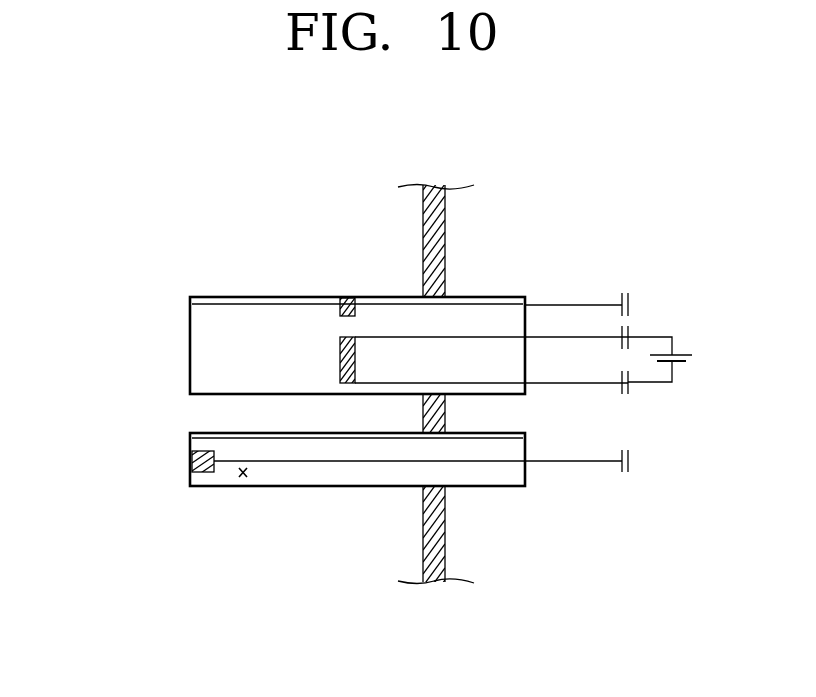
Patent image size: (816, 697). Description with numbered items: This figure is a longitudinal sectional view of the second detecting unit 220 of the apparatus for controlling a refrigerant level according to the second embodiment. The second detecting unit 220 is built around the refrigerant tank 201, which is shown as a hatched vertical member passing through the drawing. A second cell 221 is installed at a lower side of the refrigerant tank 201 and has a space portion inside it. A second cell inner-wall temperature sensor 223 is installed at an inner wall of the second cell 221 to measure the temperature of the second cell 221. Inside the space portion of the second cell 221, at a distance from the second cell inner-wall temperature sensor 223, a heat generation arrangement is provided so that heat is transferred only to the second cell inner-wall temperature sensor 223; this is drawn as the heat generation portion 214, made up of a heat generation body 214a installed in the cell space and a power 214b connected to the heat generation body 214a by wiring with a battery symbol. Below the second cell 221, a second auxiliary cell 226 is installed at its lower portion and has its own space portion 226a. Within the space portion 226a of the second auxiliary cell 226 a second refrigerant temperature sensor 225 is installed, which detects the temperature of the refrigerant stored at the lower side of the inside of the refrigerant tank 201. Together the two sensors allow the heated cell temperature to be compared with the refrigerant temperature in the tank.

The refrigerant tank 201 is at (446, 215).
The second detecting unit 220 is at (300, 293).
The second cell 221 is at (220, 297).
The second cell inner-wall temperature sensor 223 is at (346, 297).
The second refrigerant temperature sensor 225 is at (192, 457).
The second auxiliary cell 226 is at (313, 486).
The space portion 226a is at (243, 478).
The first heat generation portion 214 is at (462, 443).
The first heat generation body 214a is at (355, 344).
The first power 214b is at (682, 366).